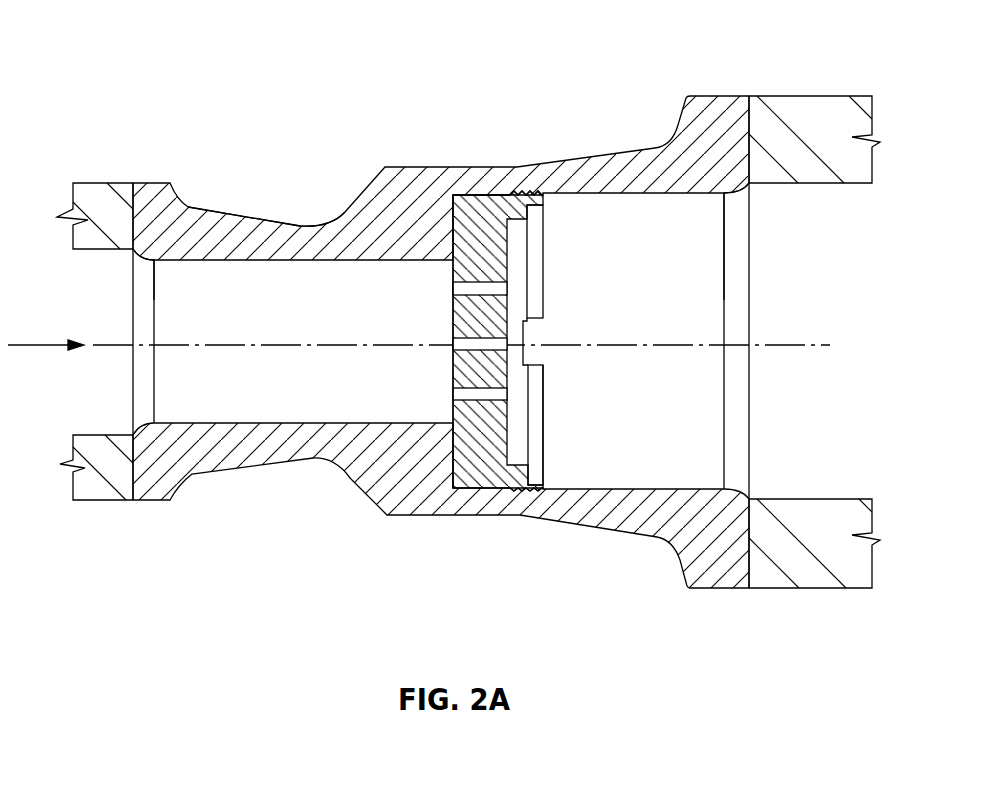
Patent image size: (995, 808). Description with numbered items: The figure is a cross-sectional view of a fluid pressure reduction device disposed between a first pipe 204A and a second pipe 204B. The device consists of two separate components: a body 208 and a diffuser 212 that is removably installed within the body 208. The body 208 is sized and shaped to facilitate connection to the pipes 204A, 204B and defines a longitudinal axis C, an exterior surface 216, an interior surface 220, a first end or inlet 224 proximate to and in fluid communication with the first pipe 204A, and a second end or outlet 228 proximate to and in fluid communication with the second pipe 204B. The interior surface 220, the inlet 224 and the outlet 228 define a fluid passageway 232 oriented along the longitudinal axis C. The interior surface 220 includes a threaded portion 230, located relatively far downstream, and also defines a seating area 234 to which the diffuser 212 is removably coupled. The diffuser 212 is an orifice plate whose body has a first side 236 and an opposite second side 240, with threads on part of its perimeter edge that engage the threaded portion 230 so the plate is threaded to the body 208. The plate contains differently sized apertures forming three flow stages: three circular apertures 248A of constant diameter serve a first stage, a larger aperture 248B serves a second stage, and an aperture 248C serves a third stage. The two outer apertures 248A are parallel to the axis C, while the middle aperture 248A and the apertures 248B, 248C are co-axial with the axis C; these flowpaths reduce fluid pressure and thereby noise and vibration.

The first pipe 204A is at (96, 184).
The second pipe 204B is at (810, 96).
The body 208 is at (415, 167).
The diffuser 212 is at (487, 491).
The exterior surface 216 is at (240, 213).
The interior surface 220 is at (287, 228).
The inlet 224 is at (135, 293).
The outlet 228 is at (745, 247).
The threaded portion 230 is at (522, 192).
The fluid passageway 232 is at (447, 307).
The seating area 234 is at (478, 192).
The first side 236 is at (455, 352).
The second side 240 is at (543, 443).
The aperture 248A is at (492, 393).
The aperture 248B is at (513, 335).
The aperture 248C is at (533, 257).
The longitudinal axis C is at (776, 346).